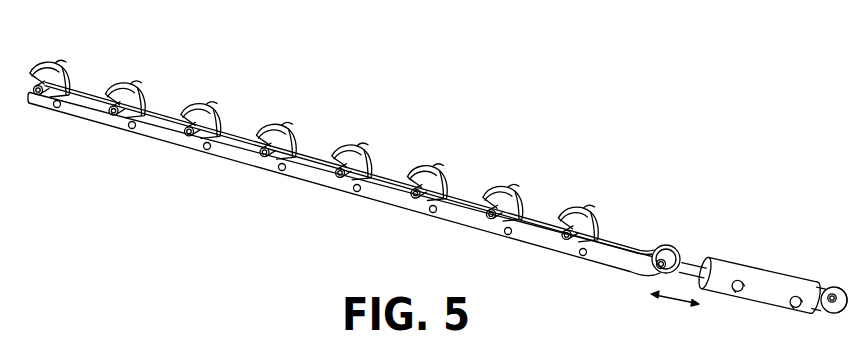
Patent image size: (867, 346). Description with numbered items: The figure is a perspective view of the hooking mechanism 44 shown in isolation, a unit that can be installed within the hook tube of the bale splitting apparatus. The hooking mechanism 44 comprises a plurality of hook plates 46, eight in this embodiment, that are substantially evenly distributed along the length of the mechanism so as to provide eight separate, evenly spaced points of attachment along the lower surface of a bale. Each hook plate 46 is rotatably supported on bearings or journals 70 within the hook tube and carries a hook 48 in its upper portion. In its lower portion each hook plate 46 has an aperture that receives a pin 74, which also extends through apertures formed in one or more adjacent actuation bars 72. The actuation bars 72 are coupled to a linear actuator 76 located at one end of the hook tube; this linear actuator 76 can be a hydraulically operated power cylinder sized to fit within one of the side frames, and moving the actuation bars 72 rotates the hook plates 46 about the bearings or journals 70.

The hooking mechanism 44 is at (437, 165).
The hook plates 46 is at (210, 131).
The hook 48 is at (125, 78).
The bearings or journals 70 is at (340, 145).
The actuation bars 72 is at (617, 237).
The pin 74 is at (432, 212).
The linear actuator 76 is at (743, 266).